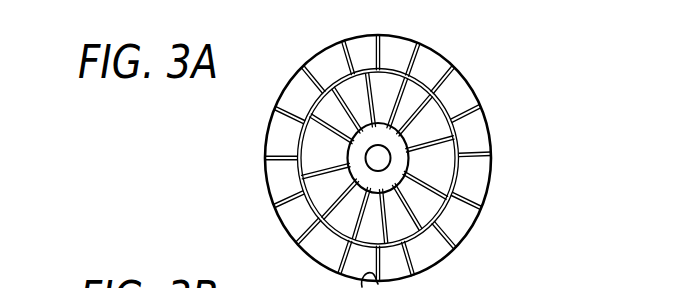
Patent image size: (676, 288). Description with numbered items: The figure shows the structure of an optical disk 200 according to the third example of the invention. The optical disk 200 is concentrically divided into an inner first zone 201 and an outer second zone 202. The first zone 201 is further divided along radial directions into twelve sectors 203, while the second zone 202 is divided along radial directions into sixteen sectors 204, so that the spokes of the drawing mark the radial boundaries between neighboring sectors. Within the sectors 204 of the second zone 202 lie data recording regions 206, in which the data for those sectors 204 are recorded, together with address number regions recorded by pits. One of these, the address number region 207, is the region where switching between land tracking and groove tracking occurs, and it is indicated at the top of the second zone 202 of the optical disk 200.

The optical disk 200 is at (244, 168).
The first zone 201 is at (423, 158).
The second zone 202 is at (418, 158).
The sectors 203 is at (406, 136).
The sectors 204 is at (418, 160).
The data recording regions 206 is at (434, 264).
The address number region 207 is at (317, 47).